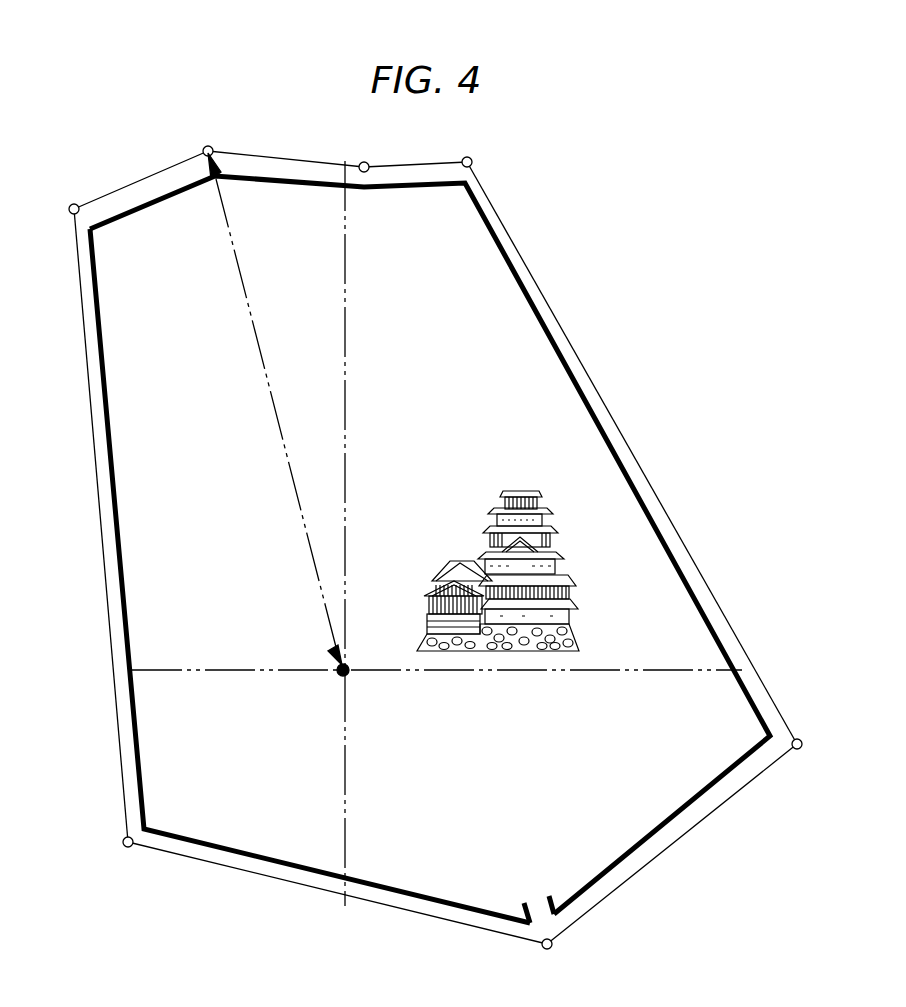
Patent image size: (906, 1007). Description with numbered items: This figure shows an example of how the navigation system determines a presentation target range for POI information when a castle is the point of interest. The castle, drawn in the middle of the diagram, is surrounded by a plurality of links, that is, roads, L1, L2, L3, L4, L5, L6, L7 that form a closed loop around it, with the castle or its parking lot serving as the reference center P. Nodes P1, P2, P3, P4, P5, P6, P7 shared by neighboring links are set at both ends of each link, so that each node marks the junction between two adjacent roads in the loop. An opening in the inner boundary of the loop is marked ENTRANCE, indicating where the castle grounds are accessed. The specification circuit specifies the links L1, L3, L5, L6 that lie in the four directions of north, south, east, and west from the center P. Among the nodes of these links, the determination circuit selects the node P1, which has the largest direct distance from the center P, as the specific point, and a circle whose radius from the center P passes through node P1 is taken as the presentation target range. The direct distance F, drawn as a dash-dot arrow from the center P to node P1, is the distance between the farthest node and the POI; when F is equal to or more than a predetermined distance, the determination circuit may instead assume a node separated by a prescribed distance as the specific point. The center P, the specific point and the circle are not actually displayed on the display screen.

The node P1 is at (209, 138).
The node P2 is at (364, 151).
The node P3 is at (467, 148).
The node P4 is at (800, 764).
The node P5 is at (548, 962).
The node P6 is at (111, 848).
The node P7 is at (60, 206).
The link L1 is at (286, 148).
The link L2 is at (415, 148).
The link L3 is at (632, 453).
The link L4 is at (672, 844).
The link L5 is at (337, 893).
The link L6 is at (99, 525).
The link L7 is at (141, 180).
The center P is at (355, 688).
The direct distance F is at (275, 409).
The entrance gap in boundary wall ENTRANCE is at (513, 898).